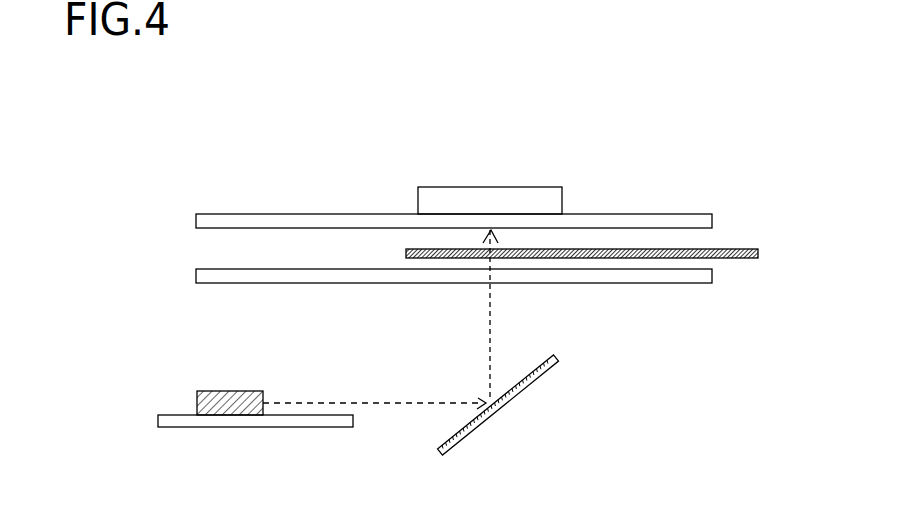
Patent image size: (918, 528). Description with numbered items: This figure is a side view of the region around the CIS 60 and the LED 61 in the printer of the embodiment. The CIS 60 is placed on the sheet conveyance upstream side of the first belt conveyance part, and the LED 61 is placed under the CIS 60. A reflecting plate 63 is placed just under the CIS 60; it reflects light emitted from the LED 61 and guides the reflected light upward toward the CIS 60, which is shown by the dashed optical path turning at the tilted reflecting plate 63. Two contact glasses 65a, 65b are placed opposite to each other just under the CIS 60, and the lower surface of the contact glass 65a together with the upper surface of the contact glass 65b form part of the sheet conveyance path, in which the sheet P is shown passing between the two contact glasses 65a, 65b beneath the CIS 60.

The CIS 60 is at (540, 187).
The LED 61 is at (212, 391).
The reflecting plate 63 is at (522, 388).
The contact glass 65a is at (297, 213).
The contact glass 65b is at (297, 284).
The sheet / recording medium P is at (752, 249).